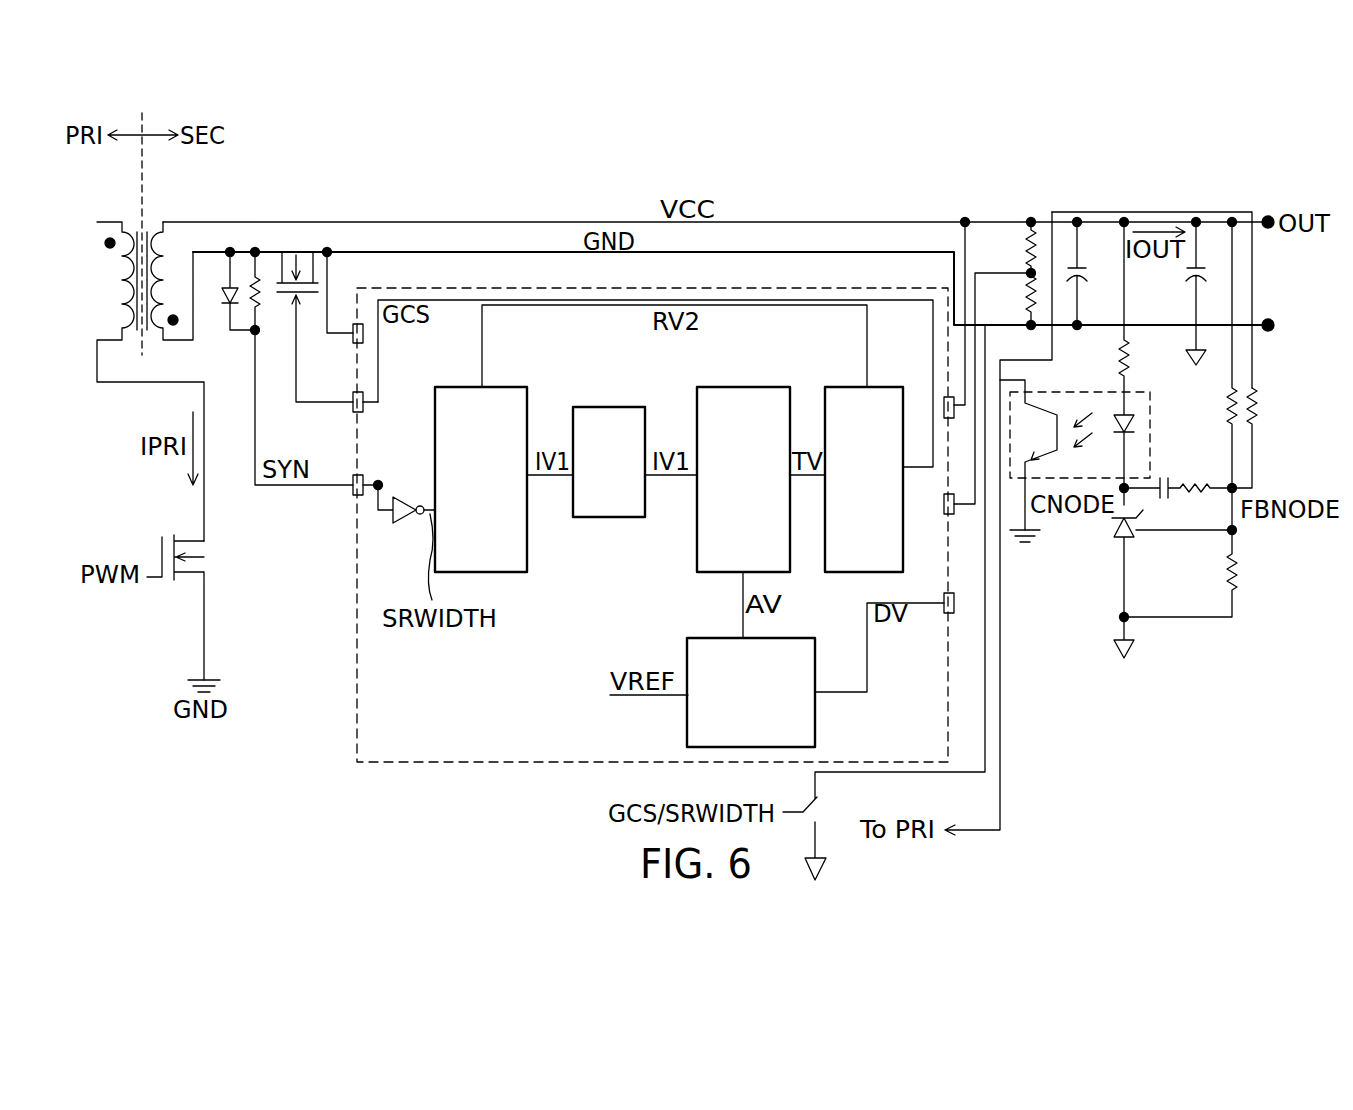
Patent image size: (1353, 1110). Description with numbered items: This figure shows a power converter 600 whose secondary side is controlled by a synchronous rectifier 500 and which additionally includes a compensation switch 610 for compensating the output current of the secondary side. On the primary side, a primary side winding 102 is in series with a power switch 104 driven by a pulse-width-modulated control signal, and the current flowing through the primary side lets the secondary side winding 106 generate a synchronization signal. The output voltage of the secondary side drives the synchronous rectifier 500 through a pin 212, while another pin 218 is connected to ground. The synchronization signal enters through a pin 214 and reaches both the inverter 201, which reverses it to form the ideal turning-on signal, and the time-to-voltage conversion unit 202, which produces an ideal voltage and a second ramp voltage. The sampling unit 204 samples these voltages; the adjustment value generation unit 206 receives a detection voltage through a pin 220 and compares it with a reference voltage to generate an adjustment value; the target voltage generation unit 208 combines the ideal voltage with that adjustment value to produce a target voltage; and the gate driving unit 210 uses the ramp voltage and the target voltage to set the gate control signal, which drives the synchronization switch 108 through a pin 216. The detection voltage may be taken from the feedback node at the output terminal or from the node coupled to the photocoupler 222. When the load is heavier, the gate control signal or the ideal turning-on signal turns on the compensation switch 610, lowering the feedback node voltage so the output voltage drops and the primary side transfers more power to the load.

The primary side winding 102 is at (122, 272).
The power switch 104 is at (185, 580).
The secondary side winding 106 is at (155, 222).
The synchronization switch 108 is at (288, 258).
The inverter 201 is at (398, 525).
The time-to-voltage conversion unit 202 is at (505, 386).
The sampling unit 204 is at (612, 406).
The adjustment value generation unit 206 is at (716, 637).
The target voltage generation unit 208 is at (746, 386).
The gate driving unit 210 is at (877, 386).
The pin 212 is at (945, 420).
The pin 214 is at (353, 475).
The pin 216 is at (353, 392).
The pin 218 is at (353, 323).
The pin 220 is at (944, 614).
The photocoupler 222 is at (1150, 434).
The synchronous rectifier 500 is at (456, 764).
The power converter 600 is at (1178, 160).
The compensation switch 610 is at (814, 808).